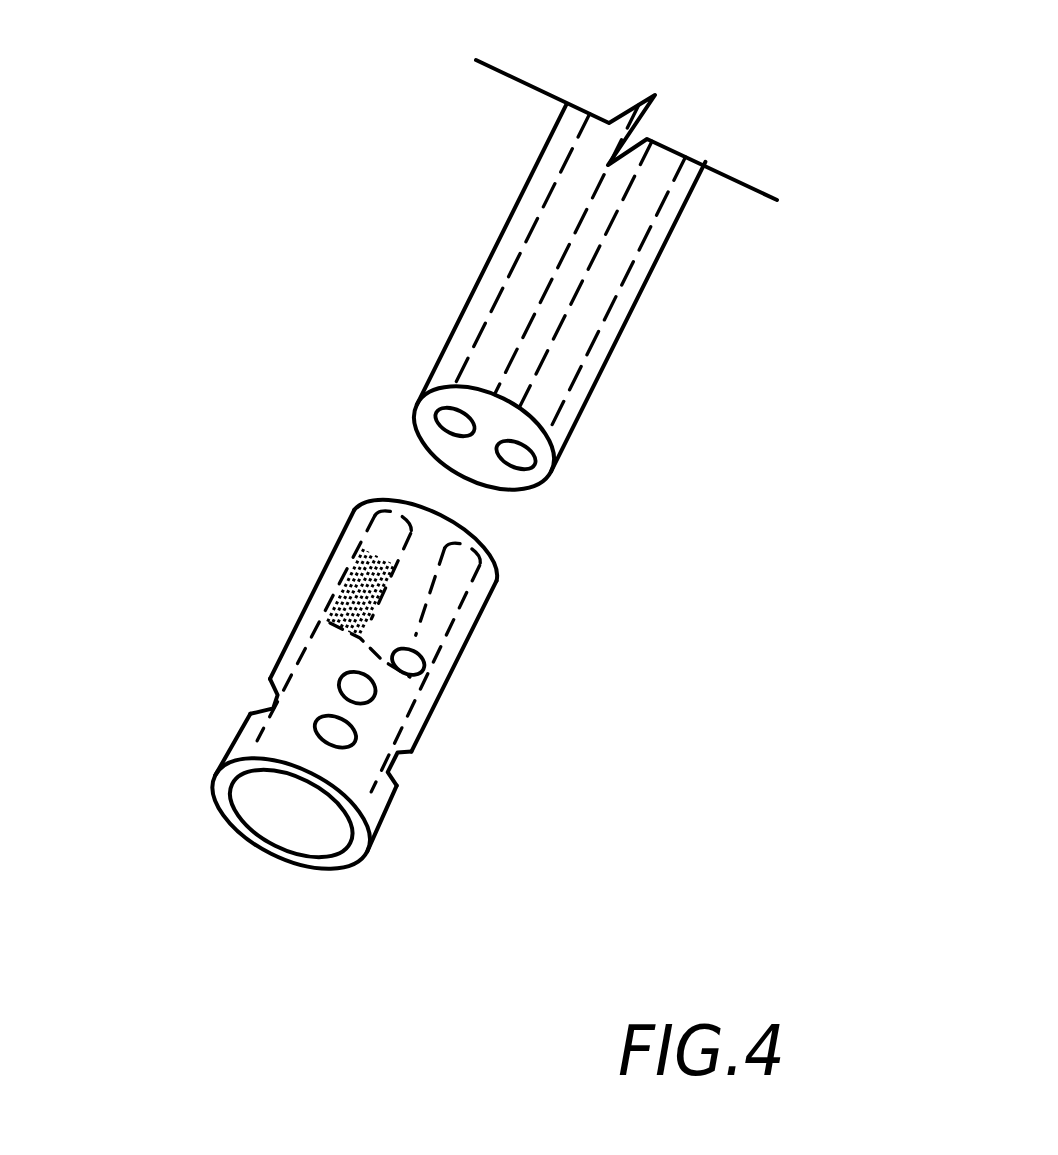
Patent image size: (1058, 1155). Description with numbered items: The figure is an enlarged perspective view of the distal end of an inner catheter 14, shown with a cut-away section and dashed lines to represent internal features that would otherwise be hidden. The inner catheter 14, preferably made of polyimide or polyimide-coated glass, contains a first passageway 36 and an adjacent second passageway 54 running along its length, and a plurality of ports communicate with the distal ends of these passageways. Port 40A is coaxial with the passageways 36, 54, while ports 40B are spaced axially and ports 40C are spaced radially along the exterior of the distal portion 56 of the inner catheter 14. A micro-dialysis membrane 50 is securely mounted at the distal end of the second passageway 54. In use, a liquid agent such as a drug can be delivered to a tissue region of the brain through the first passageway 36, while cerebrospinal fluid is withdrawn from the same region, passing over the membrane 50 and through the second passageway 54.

The inner catheter 14 is at (552, 152).
The second passageway 54 is at (523, 292).
The distal end of first passageway 56 is at (657, 242).
The first passageway 36 is at (563, 372).
The micro-dialysis membrane 50 is at (352, 600).
The port 40A is at (290, 810).
The ports 40B is at (332, 733).
The ports 40C is at (267, 693).